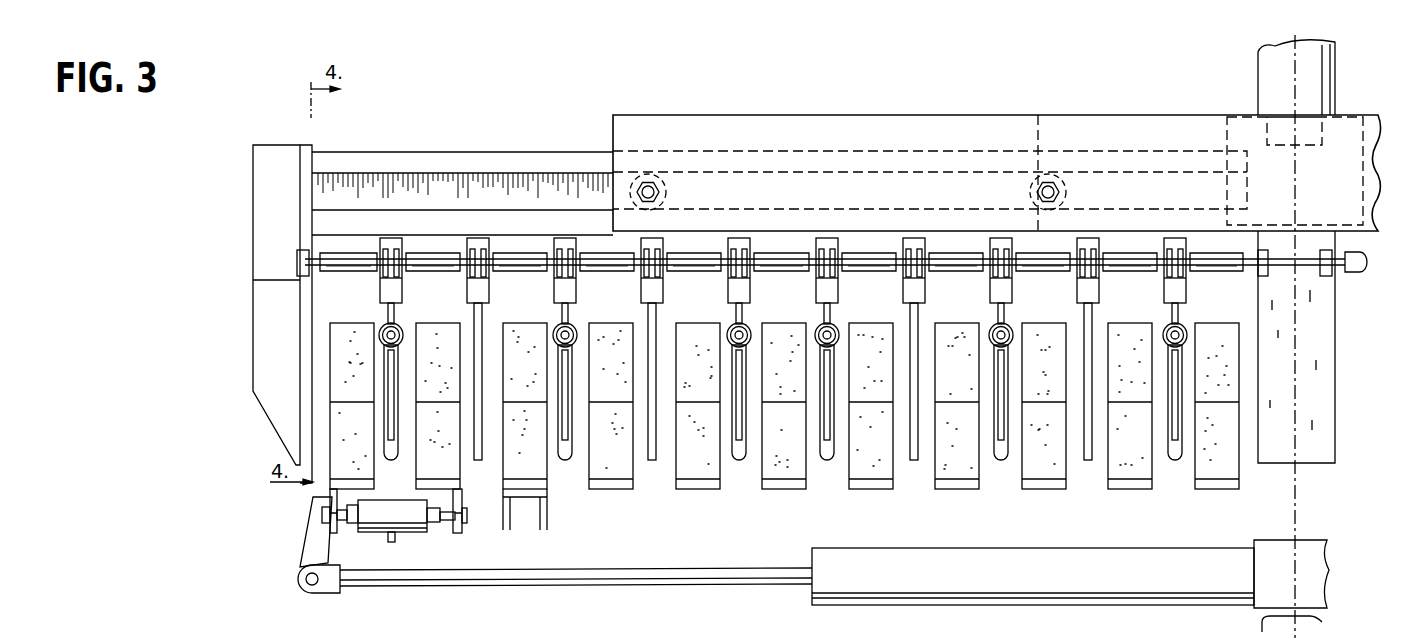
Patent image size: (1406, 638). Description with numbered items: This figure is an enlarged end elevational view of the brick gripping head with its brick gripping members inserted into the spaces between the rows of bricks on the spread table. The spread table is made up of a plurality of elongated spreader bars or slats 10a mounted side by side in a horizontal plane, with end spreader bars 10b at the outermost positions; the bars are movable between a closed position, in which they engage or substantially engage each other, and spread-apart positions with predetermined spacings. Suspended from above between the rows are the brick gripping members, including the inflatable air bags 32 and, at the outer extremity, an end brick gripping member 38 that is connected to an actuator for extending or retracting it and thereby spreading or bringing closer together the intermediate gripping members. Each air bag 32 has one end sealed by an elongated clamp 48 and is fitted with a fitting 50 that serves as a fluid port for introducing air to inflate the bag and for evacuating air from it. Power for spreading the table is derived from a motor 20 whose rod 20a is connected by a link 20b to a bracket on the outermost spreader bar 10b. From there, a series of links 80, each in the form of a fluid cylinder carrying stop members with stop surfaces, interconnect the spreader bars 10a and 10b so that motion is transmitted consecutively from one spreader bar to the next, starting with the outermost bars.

The spreader bar 10a is at (442, 486).
The end spreader bar 10b is at (347, 483).
The pneumatic cylinder 20 is at (1022, 560).
The rod 20a is at (637, 578).
The link 20b is at (310, 553).
The air bag 32 is at (565, 466).
The end brick gripping member 38 is at (265, 337).
The elongated clamp 48 is at (745, 432).
The fitting 50 is at (832, 323).
The link 80 is at (413, 520).